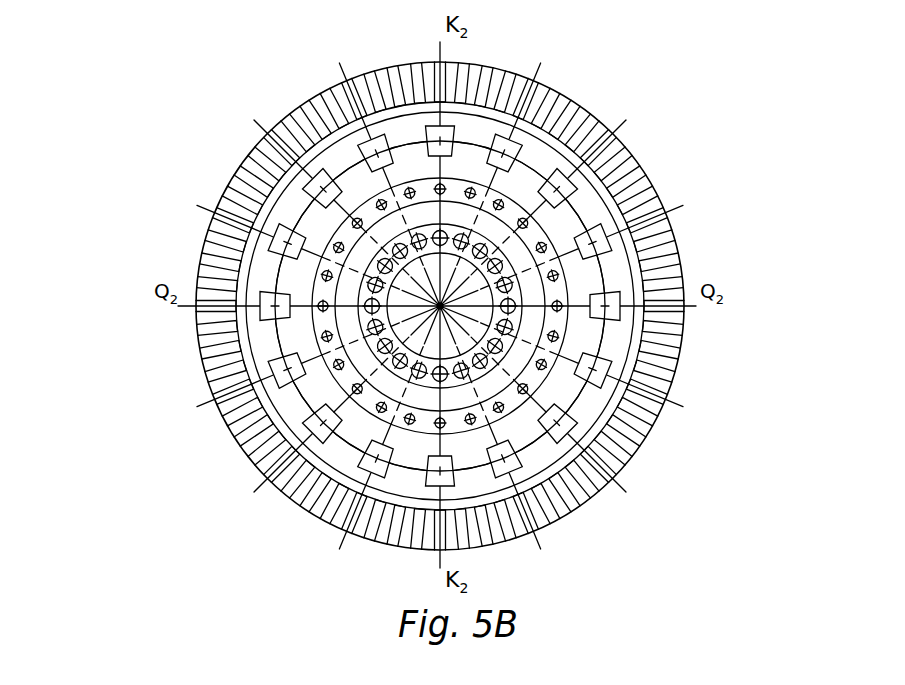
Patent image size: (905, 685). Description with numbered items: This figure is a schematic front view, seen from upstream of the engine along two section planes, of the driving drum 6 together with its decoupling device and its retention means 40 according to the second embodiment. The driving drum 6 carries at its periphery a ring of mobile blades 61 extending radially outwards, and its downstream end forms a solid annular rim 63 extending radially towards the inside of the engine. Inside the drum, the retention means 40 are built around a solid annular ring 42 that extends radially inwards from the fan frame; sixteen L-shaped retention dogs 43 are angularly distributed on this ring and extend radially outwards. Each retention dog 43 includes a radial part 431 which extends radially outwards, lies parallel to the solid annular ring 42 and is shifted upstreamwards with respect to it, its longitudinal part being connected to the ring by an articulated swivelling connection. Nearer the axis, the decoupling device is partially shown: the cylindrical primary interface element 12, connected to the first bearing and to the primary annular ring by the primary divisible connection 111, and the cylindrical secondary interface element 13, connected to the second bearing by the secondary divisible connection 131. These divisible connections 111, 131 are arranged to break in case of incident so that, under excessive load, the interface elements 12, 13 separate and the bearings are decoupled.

The driving drum 6 is at (474, 306).
The mobile blades 61 is at (622, 153).
The downstream end / solid annular rim 63 is at (587, 192).
The retention means 40 is at (506, 306).
The solid annular ring 42 is at (585, 333).
The radial part 431 is at (607, 313).
The retention dog 43 is at (598, 383).
The secondary divisible connection 131 is at (300, 388).
The primary divisible connection 111 is at (318, 301).
The secondary interface element 13 is at (383, 250).
The primary interface element 12 is at (365, 330).